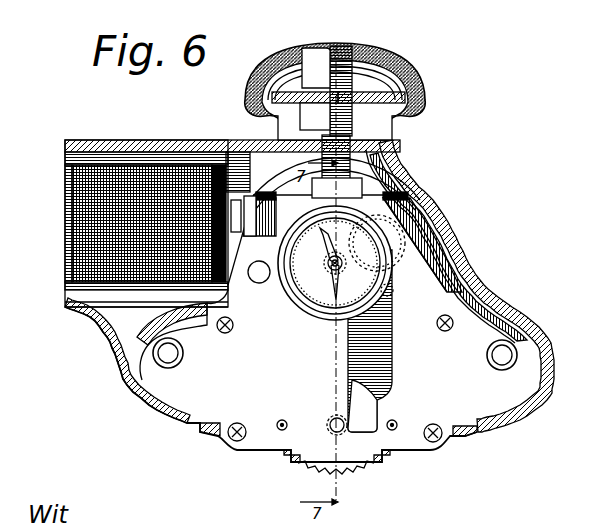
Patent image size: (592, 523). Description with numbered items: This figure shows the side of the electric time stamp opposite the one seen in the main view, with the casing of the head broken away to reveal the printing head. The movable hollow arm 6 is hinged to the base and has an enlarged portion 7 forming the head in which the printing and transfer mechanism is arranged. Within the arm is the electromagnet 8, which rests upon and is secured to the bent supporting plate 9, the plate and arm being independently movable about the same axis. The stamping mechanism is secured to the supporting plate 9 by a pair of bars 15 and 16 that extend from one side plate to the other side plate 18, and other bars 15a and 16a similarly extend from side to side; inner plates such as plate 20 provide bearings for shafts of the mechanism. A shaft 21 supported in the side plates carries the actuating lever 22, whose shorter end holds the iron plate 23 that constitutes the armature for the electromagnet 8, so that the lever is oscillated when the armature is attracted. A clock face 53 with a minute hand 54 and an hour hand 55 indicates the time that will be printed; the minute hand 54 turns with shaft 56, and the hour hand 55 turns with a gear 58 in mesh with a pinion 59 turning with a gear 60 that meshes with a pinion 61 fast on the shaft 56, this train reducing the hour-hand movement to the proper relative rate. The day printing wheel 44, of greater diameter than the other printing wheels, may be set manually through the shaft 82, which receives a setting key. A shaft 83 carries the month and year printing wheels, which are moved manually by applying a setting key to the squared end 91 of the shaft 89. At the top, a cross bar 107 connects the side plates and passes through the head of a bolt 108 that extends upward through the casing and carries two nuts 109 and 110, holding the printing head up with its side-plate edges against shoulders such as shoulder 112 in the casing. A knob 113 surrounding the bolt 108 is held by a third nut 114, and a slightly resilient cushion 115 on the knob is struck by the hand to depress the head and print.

The movable hollow arm 6 is at (70, 140).
The enlarged portion forming a head 7 is at (420, 180).
The electromagnet 8 is at (142, 183).
The bent supporting plate 9 is at (133, 288).
The bar 15 is at (227, 334).
The bar 15a is at (228, 447).
The bar 16 is at (446, 331).
The bar 16a is at (442, 442).
The side plate 18 is at (490, 400).
The plate 20 is at (370, 341).
The shaft 21 is at (259, 283).
The actuating lever 22 is at (256, 238).
The iron plate (armature) 23 is at (240, 200).
The day printing wheel 44 is at (364, 470).
The clock face 53 is at (362, 290).
The minute hand 54 is at (400, 258).
The hour hand 55 is at (307, 300).
The shaft 56 is at (333, 305).
The gear 58 is at (390, 292).
The pinion 59 is at (412, 240).
The gear 60 is at (385, 226).
The pinion 61 is at (330, 278).
The shaft 82 is at (396, 421).
The shaft 83 is at (336, 415).
The shaft 89 is at (282, 420).
The squared end 91 is at (274, 452).
The cross bar 107 is at (346, 187).
The bolt 108 is at (337, 202).
The nut 109 is at (303, 104).
The nut 110 is at (371, 104).
The shoulder 112 is at (250, 210).
The knob 113 is at (403, 72).
The third nut 114 is at (318, 82).
The resilient cushion 115 is at (367, 50).